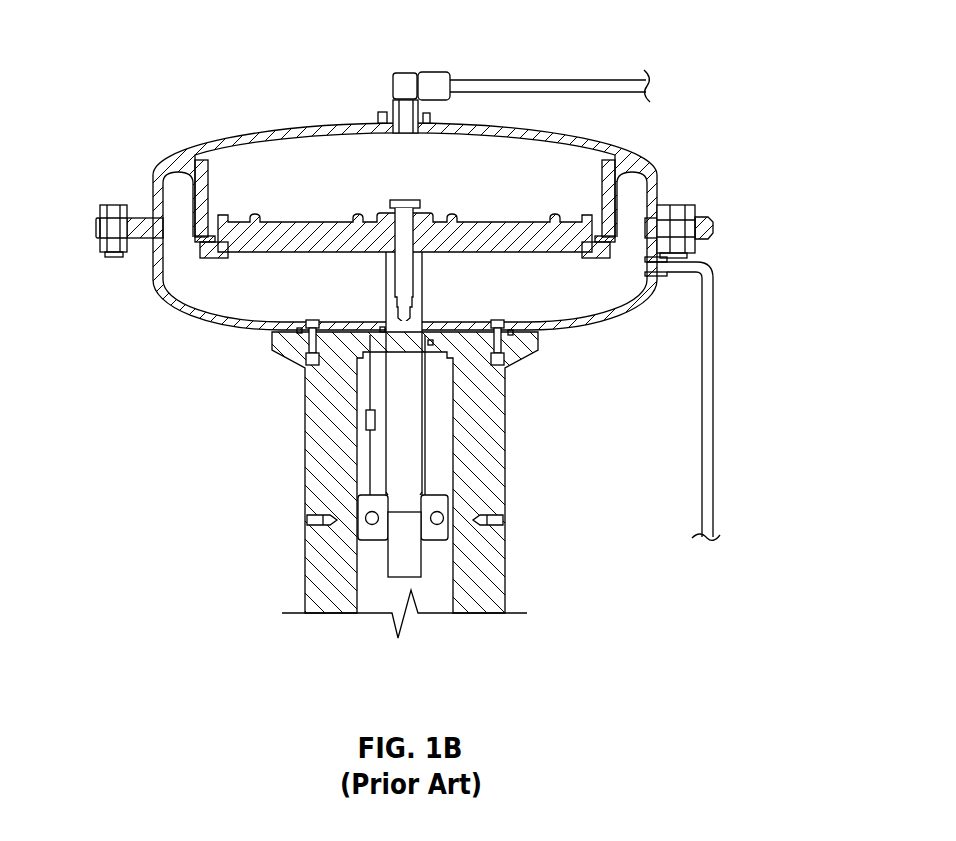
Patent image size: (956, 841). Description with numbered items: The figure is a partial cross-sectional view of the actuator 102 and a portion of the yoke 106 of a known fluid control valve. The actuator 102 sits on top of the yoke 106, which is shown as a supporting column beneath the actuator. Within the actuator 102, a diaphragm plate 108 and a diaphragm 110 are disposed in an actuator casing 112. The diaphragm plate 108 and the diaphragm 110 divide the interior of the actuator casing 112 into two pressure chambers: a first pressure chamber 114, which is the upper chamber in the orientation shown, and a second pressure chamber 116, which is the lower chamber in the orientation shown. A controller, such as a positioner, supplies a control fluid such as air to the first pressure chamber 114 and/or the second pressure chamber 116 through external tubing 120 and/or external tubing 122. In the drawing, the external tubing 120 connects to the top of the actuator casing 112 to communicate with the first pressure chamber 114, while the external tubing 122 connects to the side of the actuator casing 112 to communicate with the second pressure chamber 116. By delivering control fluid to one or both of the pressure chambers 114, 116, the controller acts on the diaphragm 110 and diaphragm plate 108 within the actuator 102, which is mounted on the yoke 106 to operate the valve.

The actuator 102 is at (176, 400).
The yoke 106 is at (325, 575).
The diaphragm plate 108 is at (196, 251).
The diaphragm 110 is at (165, 162).
The actuator casing 112 is at (210, 313).
The first pressure chamber 114 is at (529, 188).
The second pressure chamber 116 is at (529, 297).
The external tubing 120 is at (566, 79).
The external tubing 122 is at (708, 346).